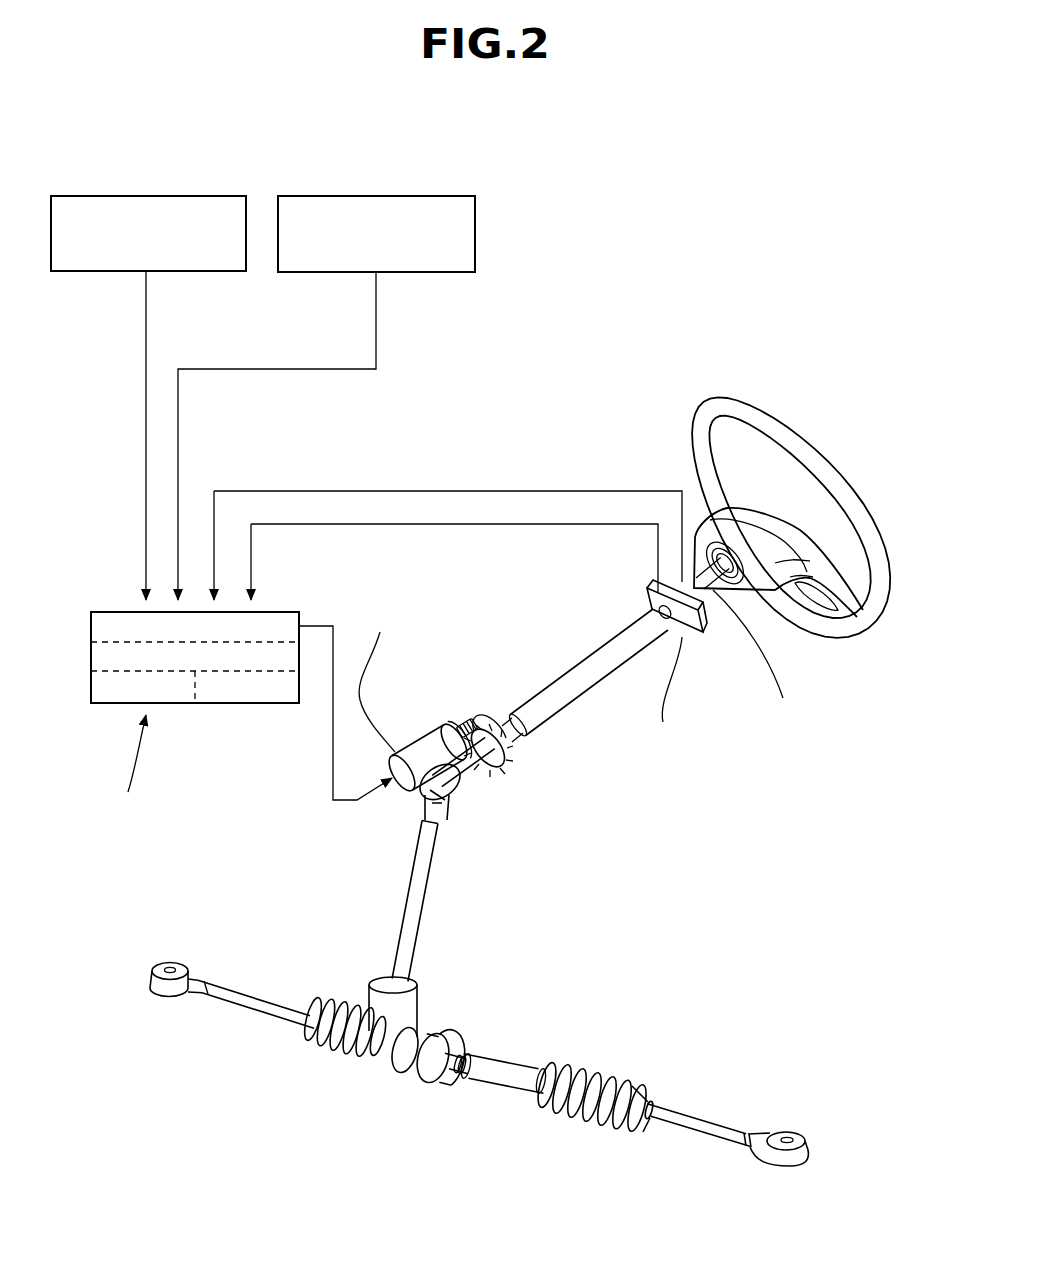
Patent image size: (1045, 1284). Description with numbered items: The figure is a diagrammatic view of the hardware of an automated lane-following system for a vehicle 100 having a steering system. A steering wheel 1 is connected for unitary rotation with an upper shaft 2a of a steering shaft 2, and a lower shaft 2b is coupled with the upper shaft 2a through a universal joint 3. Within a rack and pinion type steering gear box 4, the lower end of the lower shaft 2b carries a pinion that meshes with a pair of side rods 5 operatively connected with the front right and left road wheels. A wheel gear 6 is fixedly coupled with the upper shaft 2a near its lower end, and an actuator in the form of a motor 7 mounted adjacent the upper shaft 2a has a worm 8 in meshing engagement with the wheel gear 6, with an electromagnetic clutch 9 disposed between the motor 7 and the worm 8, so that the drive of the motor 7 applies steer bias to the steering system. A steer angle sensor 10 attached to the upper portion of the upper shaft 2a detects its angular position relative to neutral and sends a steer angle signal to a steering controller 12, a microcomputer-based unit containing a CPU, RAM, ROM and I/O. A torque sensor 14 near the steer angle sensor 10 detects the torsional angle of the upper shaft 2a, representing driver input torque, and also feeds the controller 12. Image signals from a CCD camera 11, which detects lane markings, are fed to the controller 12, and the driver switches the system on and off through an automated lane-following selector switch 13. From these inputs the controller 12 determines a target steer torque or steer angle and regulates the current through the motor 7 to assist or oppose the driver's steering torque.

The vehicle 100 is at (813, 546).
The steering wheel 1 is at (868, 530).
The steering shaft 2 is at (496, 859).
The upper shaft 2a is at (463, 764).
The lower shaft 2b is at (410, 929).
The universal joint 3 is at (413, 804).
The rack and pinion type steering gear box 4 is at (372, 990).
The side rods 5 is at (243, 1008).
The wheel gear 6 is at (512, 752).
The motor 7 is at (410, 738).
The worm 8 is at (467, 718).
The electromagnetic clutch 9 is at (449, 729).
The steer angle sensor 10 is at (703, 628).
The CCD camera 11 is at (185, 196).
The steering controller 12 is at (113, 612).
The automated lane-following selector switch 13 is at (417, 196).
The torque sensor 14 is at (700, 588).